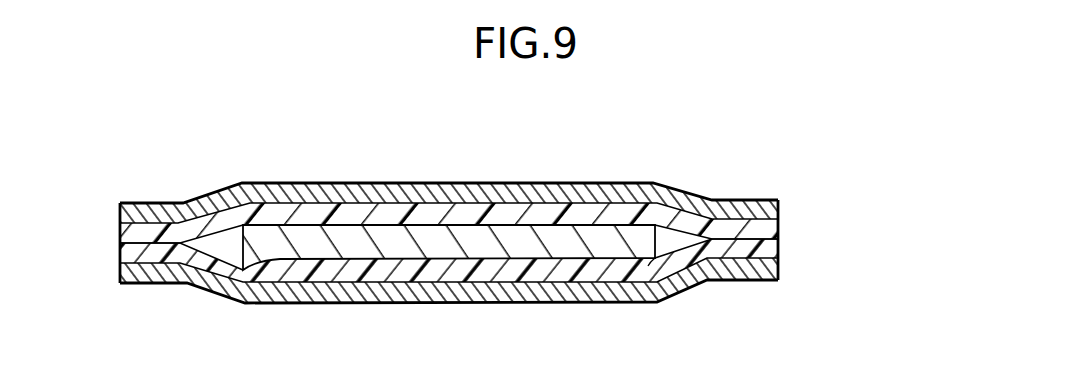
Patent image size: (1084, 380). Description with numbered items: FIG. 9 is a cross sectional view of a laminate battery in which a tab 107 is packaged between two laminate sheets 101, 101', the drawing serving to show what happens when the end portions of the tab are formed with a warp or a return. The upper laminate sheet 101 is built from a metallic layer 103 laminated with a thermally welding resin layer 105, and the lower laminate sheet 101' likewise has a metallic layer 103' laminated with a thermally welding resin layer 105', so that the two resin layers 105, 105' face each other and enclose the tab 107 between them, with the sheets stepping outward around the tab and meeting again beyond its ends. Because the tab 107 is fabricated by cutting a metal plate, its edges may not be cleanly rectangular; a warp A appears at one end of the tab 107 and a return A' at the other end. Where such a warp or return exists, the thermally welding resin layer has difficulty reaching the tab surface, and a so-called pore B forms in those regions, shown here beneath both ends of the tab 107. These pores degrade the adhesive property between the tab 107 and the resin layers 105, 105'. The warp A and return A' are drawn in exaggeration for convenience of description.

The laminate sheet 101 is at (518, 210).
The metallic layer 103 is at (485, 199).
The thermally welding resin layer 105 is at (485, 223).
The tab 107 is at (310, 238).
The thermally welding resin layer 105' is at (489, 260).
The metallic layer 103' is at (489, 280).
The laminate sheet 101' is at (526, 270).
The warp A is at (226, 195).
The return A' is at (711, 189).
The pore B is at (268, 264).